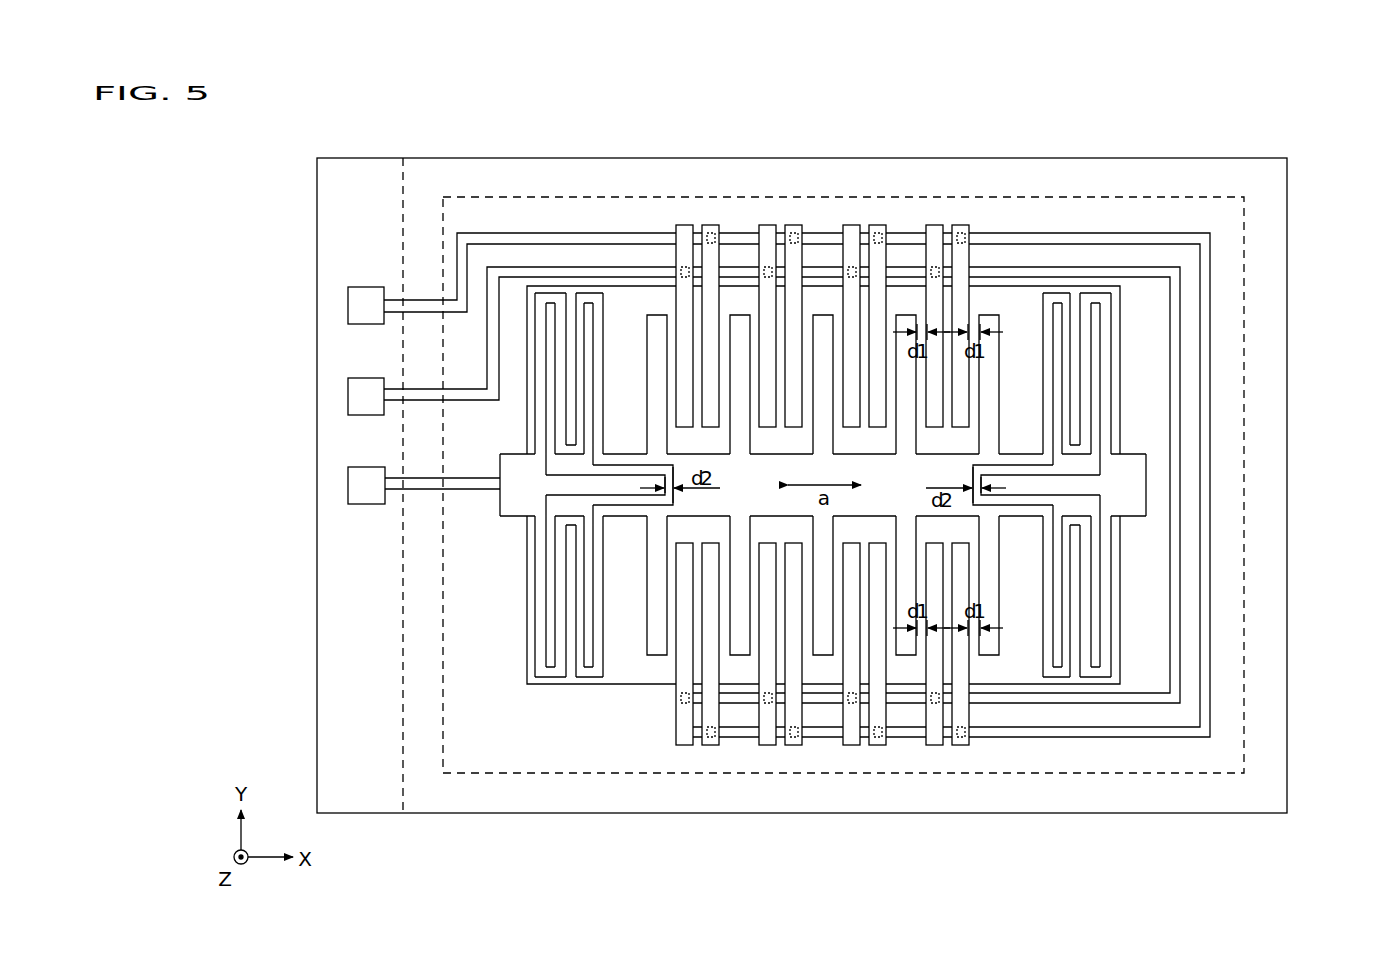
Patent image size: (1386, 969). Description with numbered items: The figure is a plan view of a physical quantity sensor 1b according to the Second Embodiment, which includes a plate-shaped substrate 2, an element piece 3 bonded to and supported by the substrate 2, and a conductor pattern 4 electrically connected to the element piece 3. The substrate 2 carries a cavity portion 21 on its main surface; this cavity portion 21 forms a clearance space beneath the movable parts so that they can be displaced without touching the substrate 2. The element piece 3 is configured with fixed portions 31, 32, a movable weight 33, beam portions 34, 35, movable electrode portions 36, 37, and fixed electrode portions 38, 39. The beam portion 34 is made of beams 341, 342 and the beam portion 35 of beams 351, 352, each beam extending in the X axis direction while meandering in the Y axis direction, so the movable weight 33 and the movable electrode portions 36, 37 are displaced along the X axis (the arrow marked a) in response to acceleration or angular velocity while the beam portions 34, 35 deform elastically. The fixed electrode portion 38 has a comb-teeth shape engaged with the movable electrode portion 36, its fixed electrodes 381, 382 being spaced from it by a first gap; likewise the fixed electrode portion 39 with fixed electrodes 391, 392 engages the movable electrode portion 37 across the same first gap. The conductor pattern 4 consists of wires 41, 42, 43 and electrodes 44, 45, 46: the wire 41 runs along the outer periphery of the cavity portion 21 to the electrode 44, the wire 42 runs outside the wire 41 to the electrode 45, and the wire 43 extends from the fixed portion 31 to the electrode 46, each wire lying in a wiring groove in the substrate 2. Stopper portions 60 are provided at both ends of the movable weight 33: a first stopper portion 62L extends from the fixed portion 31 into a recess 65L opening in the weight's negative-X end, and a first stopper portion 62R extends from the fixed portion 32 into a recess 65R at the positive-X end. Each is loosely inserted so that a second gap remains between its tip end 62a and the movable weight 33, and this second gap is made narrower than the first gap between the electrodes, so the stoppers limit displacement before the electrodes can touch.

The physical quantity sensor 1b is at (785, 437).
The substrate 2 is at (316, 178).
The element piece 3 is at (909, 467).
The conductor pattern 4 is at (885, 414).
The cavity portion 21 is at (526, 680).
The fixed portion 31 is at (500, 462).
The fixed portion 32 is at (1133, 456).
The movable weight 33 is at (823, 456).
The beam portion 34 is at (552, 479).
The beam 341 is at (583, 292).
The beam 342 is at (591, 677).
The beam portion 35 is at (1096, 467).
The beam 351 is at (1121, 287).
The beam 352 is at (1088, 677).
The movable electrode portion 36 is at (652, 315).
The movable electrode portion 37 is at (655, 656).
The fixed electrode portion 38 is at (822, 247).
The fixed electrode 381 is at (934, 225).
The fixed electrode 382 is at (959, 225).
The fixed electrode portion 39 is at (834, 722).
The fixed electrode 391 is at (937, 746).
The fixed electrode 392 is at (960, 746).
The wire 41 is at (1175, 330).
The wire 42 is at (1208, 293).
The wire 43 is at (478, 491).
The electrode 44 is at (348, 395).
The electrode 45 is at (348, 305).
The electrode 46 is at (348, 489).
The stopper portions 60 is at (824, 269).
The first stopper portion 62L is at (615, 482).
The first stopper portion 62R is at (1031, 482).
The tip end 62a is at (672, 480).
The recess 65L is at (630, 465).
The recess 65R is at (1016, 465).